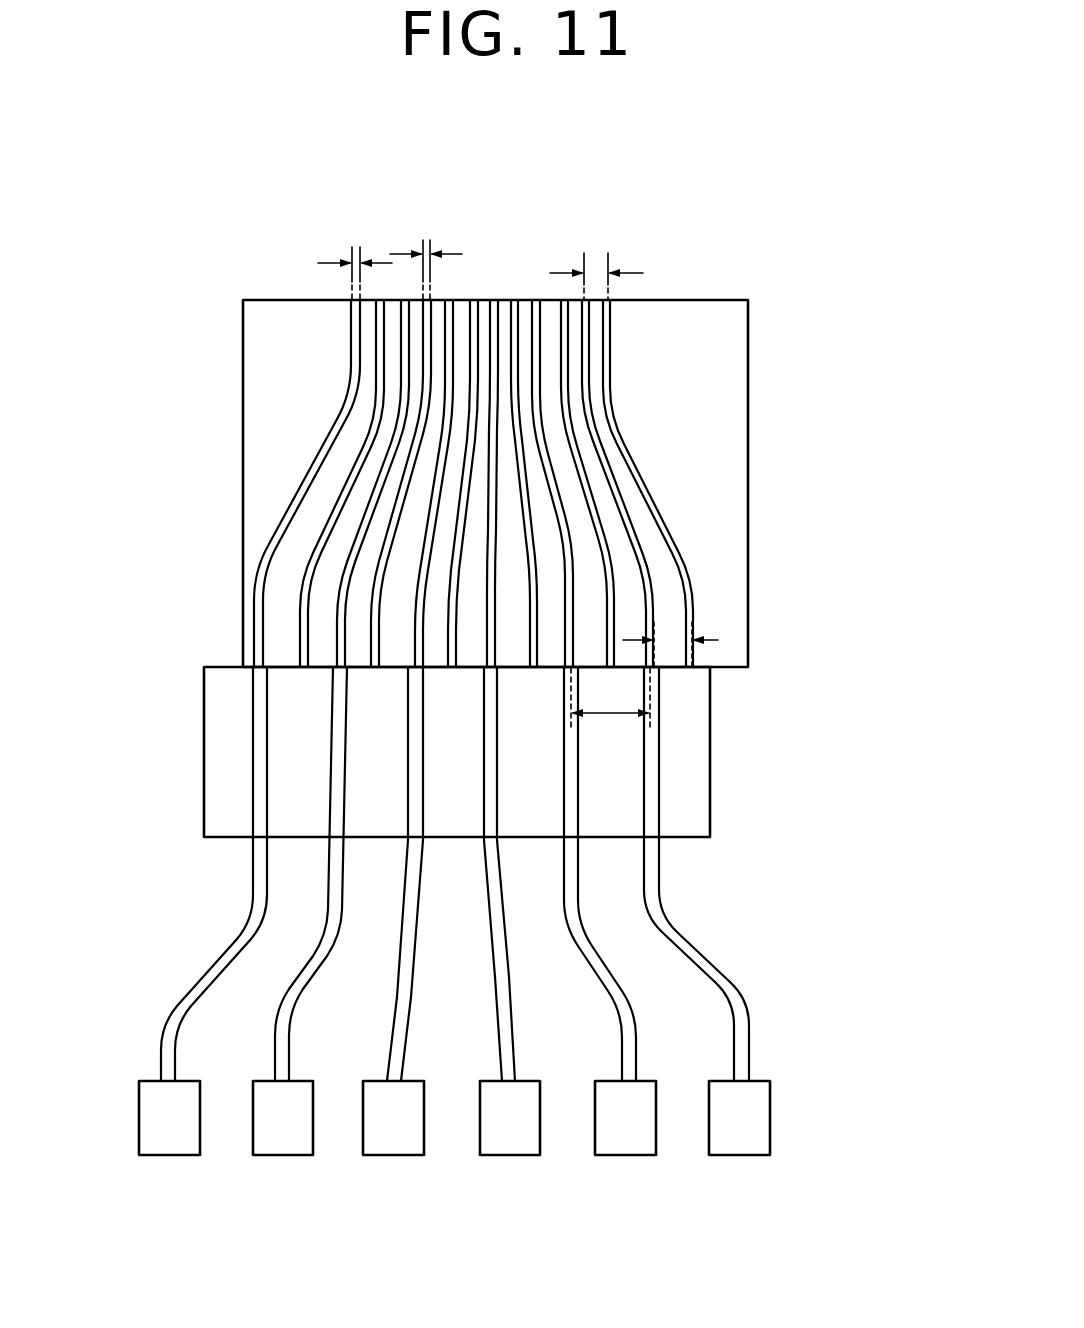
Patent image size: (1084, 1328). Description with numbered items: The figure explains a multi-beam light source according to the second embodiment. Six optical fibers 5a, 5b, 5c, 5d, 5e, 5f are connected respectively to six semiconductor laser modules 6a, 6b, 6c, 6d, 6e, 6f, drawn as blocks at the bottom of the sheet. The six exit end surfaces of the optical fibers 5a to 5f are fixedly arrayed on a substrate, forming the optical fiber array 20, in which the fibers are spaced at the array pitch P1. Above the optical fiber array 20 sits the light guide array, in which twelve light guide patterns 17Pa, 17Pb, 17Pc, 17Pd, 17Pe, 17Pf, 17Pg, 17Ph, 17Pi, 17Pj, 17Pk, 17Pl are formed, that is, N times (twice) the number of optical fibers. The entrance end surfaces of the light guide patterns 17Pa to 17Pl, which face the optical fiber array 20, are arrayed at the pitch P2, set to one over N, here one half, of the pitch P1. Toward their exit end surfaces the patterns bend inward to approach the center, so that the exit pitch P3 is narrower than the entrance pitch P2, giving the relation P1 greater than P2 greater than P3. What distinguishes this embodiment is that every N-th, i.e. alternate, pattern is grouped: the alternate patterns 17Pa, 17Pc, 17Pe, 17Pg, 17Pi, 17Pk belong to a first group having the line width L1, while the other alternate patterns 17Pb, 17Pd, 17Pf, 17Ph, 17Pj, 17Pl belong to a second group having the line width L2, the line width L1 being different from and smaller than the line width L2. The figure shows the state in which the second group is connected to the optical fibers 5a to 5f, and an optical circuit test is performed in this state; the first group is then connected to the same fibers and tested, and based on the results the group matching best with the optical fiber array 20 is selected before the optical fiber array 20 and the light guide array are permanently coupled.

The light guide pattern 17Pa is at (683, 566).
The light guide pattern 17Pb is at (598, 452).
The light guide pattern 17Pc is at (562, 413).
The light guide pattern 17Pd is at (537, 398).
The light guide pattern 17Pe is at (516, 372).
The light guide pattern 17Pf is at (497, 346).
The light guide pattern 17Pg is at (458, 622).
The light guide pattern 17Ph is at (421, 541).
The light guide pattern 17Pi is at (403, 487).
The light guide pattern 17Pj is at (400, 412).
The light guide pattern 17Pk is at (377, 373).
The light guide pattern 17Pl is at (353, 328).
The optical fiber 5a is at (733, 983).
The optical fiber 5b is at (580, 943).
The optical fiber 5c is at (488, 863).
The optical fiber 5d is at (393, 1015).
The optical fiber 5e is at (327, 927).
The optical fiber 5f is at (260, 862).
The semiconductor laser module 6a is at (768, 1113).
The semiconductor laser module 6b is at (623, 1147).
The semiconductor laser module 6c is at (508, 1147).
The semiconductor laser module 6d is at (392, 1147).
The semiconductor laser module 6e is at (283, 1147).
The semiconductor laser module 6f is at (167, 1145).
The optical fiber array 20 is at (698, 800).
The line width L1 is at (427, 240).
The line width L2 is at (357, 243).
The array pitch P1 is at (610, 715).
The array pitch P2 is at (668, 642).
The array pitch P3 is at (595, 260).